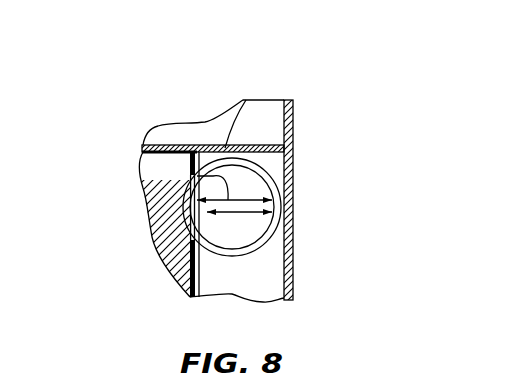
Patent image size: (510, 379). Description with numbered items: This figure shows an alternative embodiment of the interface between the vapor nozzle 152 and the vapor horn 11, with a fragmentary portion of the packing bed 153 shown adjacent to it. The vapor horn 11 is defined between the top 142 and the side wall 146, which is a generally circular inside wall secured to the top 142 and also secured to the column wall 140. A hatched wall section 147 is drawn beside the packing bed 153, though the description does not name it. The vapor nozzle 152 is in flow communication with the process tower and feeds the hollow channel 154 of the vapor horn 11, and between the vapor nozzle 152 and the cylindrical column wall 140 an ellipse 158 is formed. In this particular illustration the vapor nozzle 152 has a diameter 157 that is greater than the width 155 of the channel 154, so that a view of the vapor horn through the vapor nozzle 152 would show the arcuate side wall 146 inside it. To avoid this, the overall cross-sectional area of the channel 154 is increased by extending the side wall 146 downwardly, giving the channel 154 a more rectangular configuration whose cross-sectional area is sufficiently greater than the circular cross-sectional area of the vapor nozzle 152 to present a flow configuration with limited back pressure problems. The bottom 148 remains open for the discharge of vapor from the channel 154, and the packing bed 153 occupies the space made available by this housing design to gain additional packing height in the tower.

The vapor horn 11 is at (253, 148).
The top 142 is at (246, 100).
The channel 154 is at (274, 254).
The packing bed 153 is at (145, 201).
The hatched wall section 147 is at (157, 250).
The bottom 148 is at (218, 300).
The diameter 157 is at (189, 170).
The column wall 140 is at (285, 176).
The width 155 is at (230, 249).
The ellipse 158 is at (253, 187).
The side wall 146 is at (158, 211).
The vapor nozzle 152 is at (291, 215).